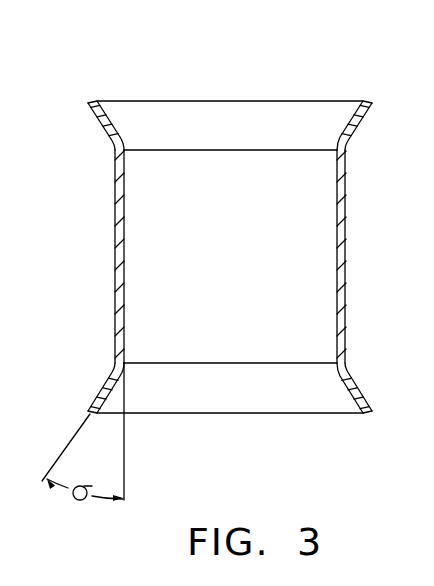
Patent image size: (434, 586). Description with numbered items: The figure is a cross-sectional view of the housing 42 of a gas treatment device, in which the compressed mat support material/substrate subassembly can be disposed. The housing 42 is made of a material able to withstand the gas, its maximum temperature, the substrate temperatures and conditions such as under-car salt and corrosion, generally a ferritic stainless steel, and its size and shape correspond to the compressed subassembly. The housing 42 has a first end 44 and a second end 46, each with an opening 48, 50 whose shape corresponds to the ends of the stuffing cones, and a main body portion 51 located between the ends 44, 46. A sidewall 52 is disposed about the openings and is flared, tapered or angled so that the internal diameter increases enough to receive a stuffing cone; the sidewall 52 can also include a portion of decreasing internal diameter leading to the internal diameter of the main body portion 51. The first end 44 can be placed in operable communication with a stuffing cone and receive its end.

The housing 42 is at (318, 77).
The first end 44 is at (378, 118).
The second end 46 is at (375, 413).
The opening 48 is at (197, 100).
The opening 50 is at (274, 413).
The main body portion 51 is at (100, 167).
The sidewall 52 is at (77, 100).